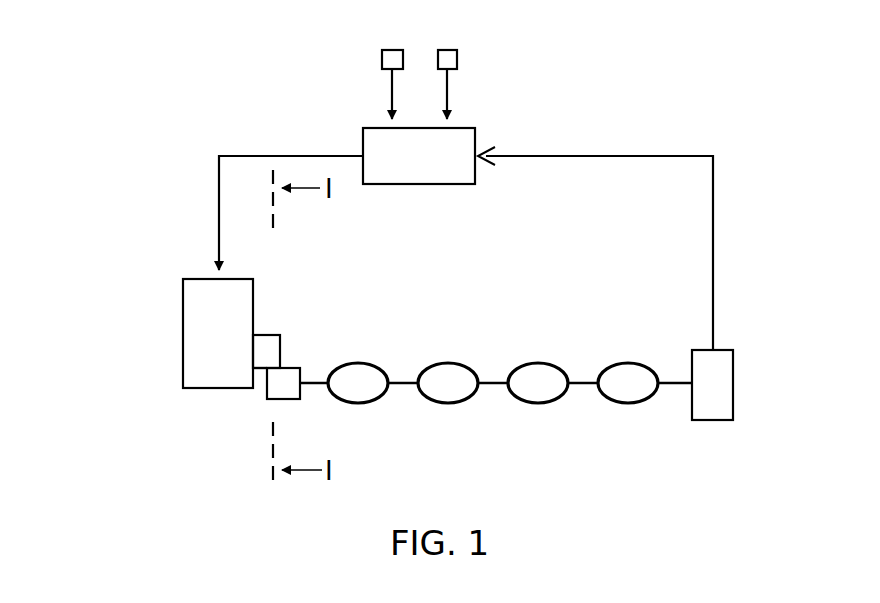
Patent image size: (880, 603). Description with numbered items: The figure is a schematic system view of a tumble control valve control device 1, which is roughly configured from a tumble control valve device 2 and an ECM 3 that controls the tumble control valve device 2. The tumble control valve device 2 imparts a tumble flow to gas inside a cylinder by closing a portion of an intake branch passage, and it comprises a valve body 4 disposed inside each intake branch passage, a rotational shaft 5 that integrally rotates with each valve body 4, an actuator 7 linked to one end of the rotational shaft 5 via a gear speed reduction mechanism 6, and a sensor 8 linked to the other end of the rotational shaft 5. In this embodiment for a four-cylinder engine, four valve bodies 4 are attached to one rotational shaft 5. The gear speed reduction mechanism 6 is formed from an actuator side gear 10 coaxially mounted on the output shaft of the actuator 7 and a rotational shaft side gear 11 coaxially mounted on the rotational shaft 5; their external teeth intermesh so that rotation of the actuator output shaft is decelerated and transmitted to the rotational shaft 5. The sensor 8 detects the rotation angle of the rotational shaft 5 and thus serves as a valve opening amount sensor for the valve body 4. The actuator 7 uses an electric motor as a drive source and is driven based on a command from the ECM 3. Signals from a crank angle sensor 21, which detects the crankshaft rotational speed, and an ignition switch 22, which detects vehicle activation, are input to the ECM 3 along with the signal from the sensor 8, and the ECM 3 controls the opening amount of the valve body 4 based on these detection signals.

The tumble control valve control device 1 is at (166, 160).
The tumble control valve device 2 is at (166, 358).
The ECM (engine control module) 3 is at (370, 140).
The valve body 4 is at (361, 372).
The rotational shaft 5 is at (492, 386).
The gear speed reduction mechanism 6 is at (347, 281).
The actuator 7 is at (212, 378).
The sensor 8 is at (711, 412).
The actuator side gear 10 is at (263, 341).
The rotational shaft side gear 11 is at (293, 372).
The crank angle sensor 21 is at (383, 60).
The ignition switch 22 is at (458, 60).